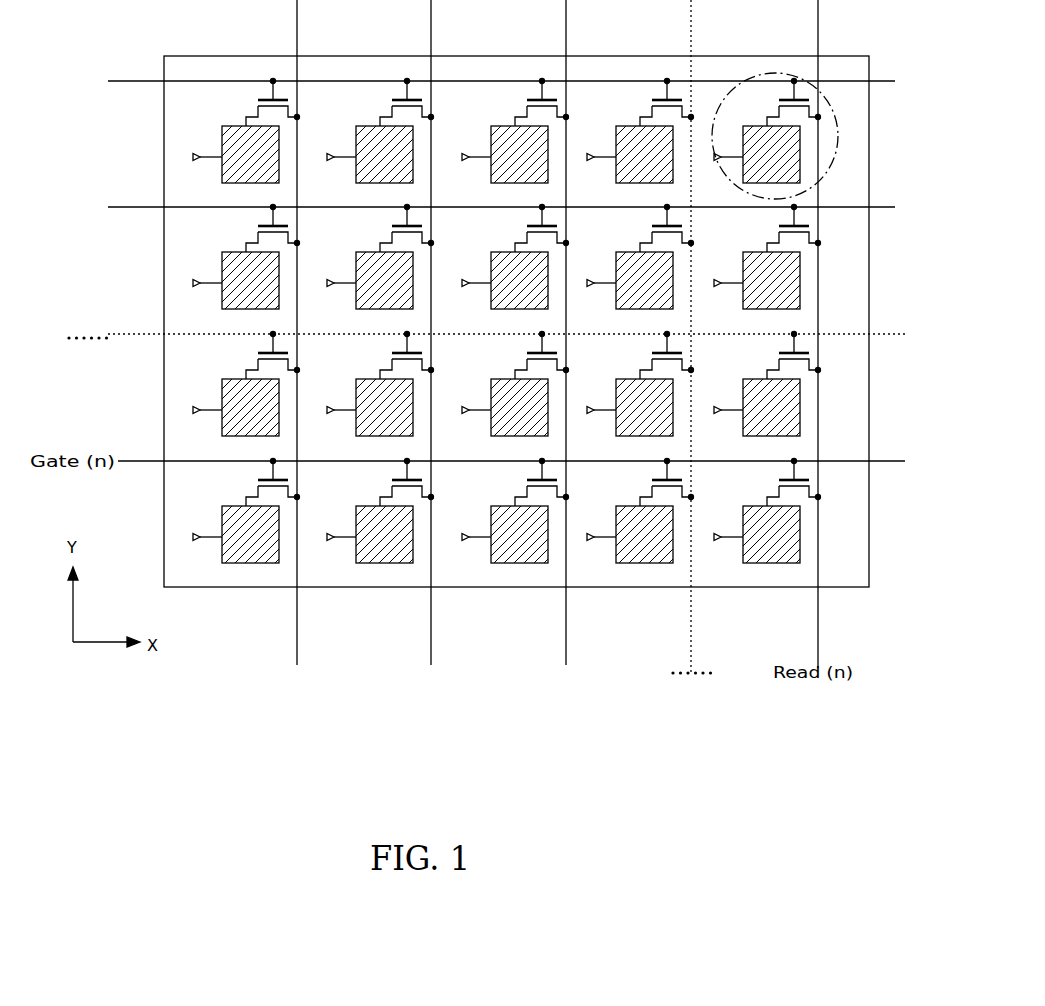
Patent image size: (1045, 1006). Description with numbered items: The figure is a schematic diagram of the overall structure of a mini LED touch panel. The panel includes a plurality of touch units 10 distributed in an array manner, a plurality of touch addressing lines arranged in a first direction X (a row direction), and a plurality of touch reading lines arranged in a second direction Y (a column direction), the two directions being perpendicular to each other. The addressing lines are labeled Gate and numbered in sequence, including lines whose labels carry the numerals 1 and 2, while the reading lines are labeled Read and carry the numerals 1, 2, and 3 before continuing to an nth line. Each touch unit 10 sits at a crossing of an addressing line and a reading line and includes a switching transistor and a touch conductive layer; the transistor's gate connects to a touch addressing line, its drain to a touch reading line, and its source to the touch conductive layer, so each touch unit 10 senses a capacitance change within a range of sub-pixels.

The touch unit 10 is at (838, 138).
The gate line 1 / read line 1 is at (476, 341).
The gate line 2 / read line 2 is at (474, 341).
The read line 3 is at (567, 341).